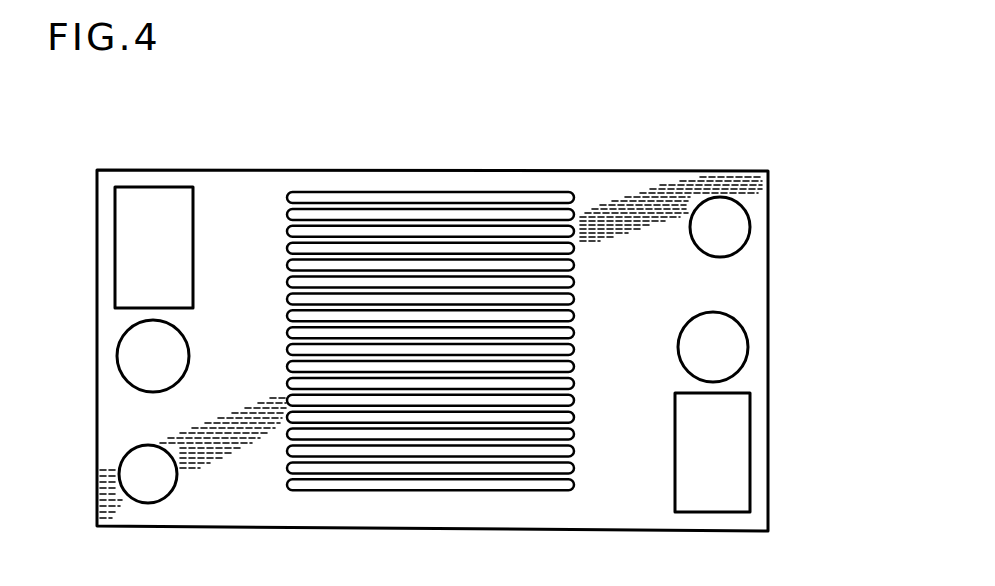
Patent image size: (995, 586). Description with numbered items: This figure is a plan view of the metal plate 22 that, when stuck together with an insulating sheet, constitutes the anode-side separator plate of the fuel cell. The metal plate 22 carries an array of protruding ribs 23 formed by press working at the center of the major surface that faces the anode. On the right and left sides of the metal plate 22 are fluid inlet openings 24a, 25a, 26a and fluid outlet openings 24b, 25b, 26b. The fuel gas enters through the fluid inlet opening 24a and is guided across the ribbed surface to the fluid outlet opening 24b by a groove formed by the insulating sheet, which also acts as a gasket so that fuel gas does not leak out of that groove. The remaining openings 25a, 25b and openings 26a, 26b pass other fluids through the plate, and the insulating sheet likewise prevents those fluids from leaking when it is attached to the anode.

The metal plate 22 is at (618, 188).
The protruding ribs 23 is at (453, 232).
The fluid inlet opening 24a is at (732, 228).
The fluid outlet opening 24b is at (130, 477).
The fluid inlet opening 25a is at (730, 350).
The fluid outlet opening 25b is at (137, 353).
The fluid inlet opening 26a is at (723, 468).
The fluid outlet opening 26b is at (137, 240).